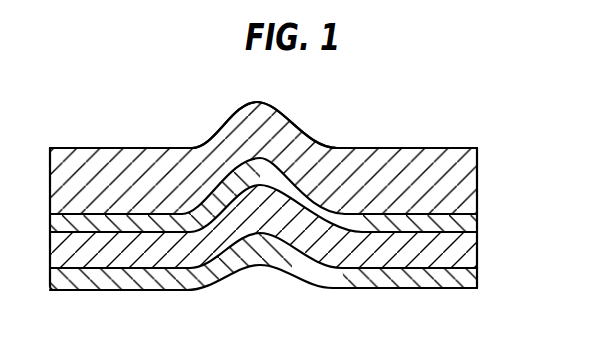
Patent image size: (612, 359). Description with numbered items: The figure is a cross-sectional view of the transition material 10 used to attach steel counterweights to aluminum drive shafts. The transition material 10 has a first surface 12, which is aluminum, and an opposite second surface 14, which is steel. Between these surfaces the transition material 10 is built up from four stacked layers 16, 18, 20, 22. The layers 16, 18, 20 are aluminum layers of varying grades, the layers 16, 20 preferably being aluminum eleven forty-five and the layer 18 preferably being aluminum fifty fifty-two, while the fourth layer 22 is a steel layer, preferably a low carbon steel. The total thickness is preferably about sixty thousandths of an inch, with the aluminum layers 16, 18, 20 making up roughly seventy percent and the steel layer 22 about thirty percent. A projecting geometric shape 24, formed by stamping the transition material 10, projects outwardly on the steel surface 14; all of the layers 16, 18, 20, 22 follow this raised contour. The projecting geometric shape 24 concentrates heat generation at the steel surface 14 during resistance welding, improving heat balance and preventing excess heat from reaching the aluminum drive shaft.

The transition material 10 is at (400, 133).
The first surface 12 is at (118, 292).
The second surface 14 is at (124, 148).
The layer 16 is at (477, 277).
The layer 18 is at (477, 255).
The layer 20 is at (477, 222).
The steel layer 22 is at (477, 152).
The projecting geometric shape 24 is at (258, 101).